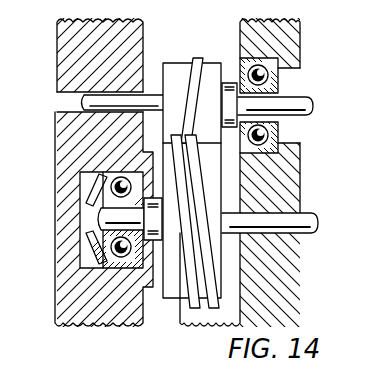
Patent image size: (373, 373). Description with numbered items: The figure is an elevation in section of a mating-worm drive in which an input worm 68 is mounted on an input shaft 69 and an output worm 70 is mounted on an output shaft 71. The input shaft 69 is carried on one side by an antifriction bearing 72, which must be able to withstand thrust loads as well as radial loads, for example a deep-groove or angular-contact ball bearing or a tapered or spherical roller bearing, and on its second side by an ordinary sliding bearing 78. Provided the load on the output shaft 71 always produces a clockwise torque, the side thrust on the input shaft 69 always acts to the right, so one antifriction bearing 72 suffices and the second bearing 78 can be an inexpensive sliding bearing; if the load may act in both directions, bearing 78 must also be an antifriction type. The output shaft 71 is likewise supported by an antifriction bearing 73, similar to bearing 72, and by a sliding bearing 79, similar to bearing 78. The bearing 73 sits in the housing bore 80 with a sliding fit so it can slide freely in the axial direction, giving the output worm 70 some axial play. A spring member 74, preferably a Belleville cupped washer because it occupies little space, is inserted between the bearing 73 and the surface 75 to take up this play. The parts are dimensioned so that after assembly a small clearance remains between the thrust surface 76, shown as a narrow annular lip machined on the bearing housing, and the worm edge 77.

The input worm 68 is at (168, 72).
The input shaft 69 is at (304, 99).
The output worm 70 is at (207, 297).
The output shaft 71 is at (315, 223).
The antifriction bearing 72 is at (273, 138).
The antifriction bearing 73 is at (112, 272).
The spring member 74 is at (98, 247).
The surface 75 is at (64, 188).
The thrust surface 76 is at (151, 286).
The worm edge 77 is at (166, 280).
The sliding bearing 78 is at (97, 91).
The sliding bearing 79 is at (271, 237).
The housing bore 80 is at (134, 272).